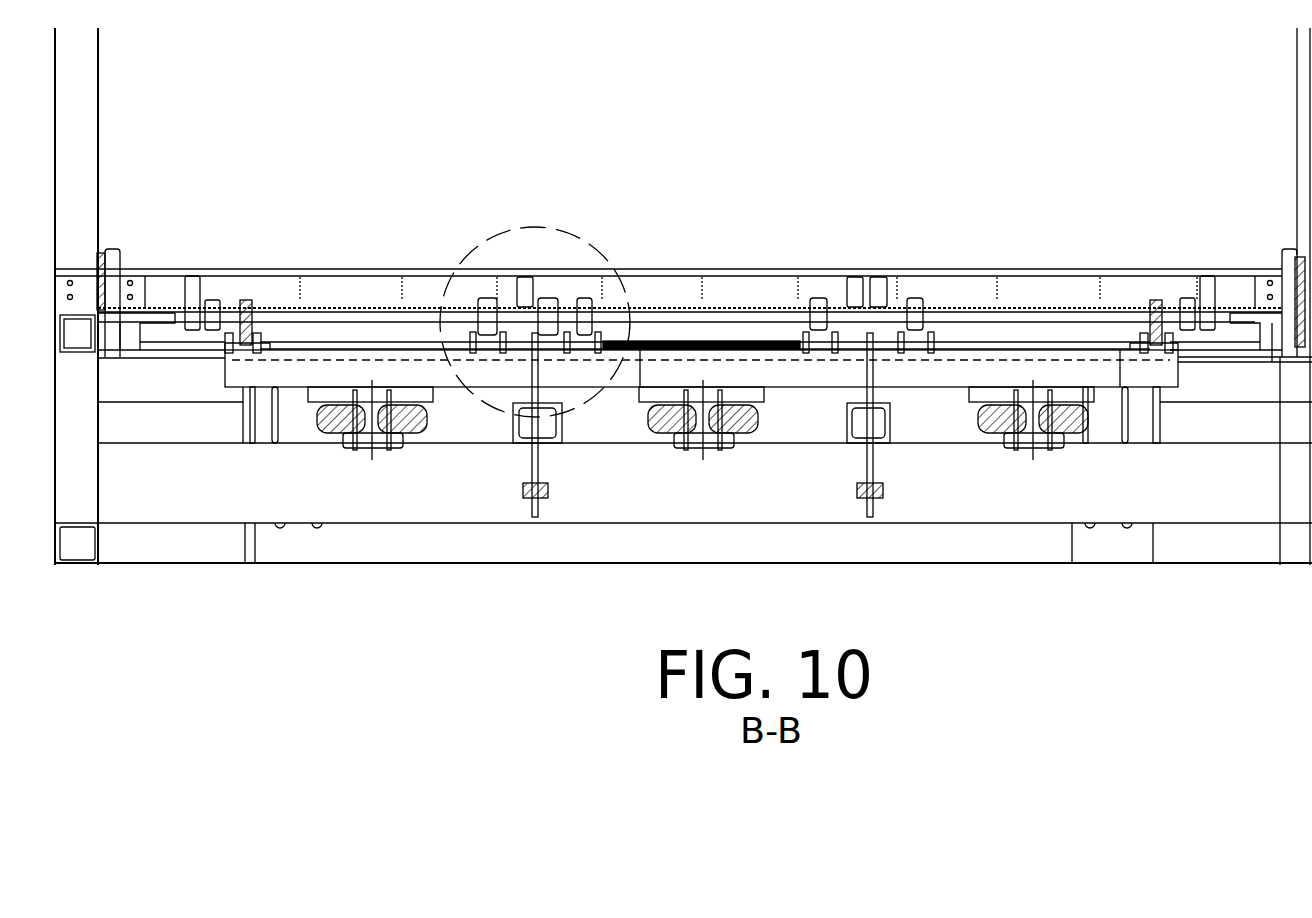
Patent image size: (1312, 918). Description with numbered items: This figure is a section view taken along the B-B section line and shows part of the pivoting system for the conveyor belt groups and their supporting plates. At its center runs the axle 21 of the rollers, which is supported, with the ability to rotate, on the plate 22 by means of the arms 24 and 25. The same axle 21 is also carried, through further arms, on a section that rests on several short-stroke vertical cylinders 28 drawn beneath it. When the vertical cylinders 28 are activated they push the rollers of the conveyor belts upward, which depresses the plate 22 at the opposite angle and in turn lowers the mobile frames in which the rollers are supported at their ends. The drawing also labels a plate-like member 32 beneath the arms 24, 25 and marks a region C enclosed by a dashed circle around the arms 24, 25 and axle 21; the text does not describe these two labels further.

The axle 21 is at (1102, 325).
The plate 22 is at (820, 270).
The arm 24 is at (522, 285).
The arm 25 is at (548, 297).
The vertical cylinder 28 is at (655, 438).
The plate 32 is at (955, 372).
The detail circle C is at (477, 242).